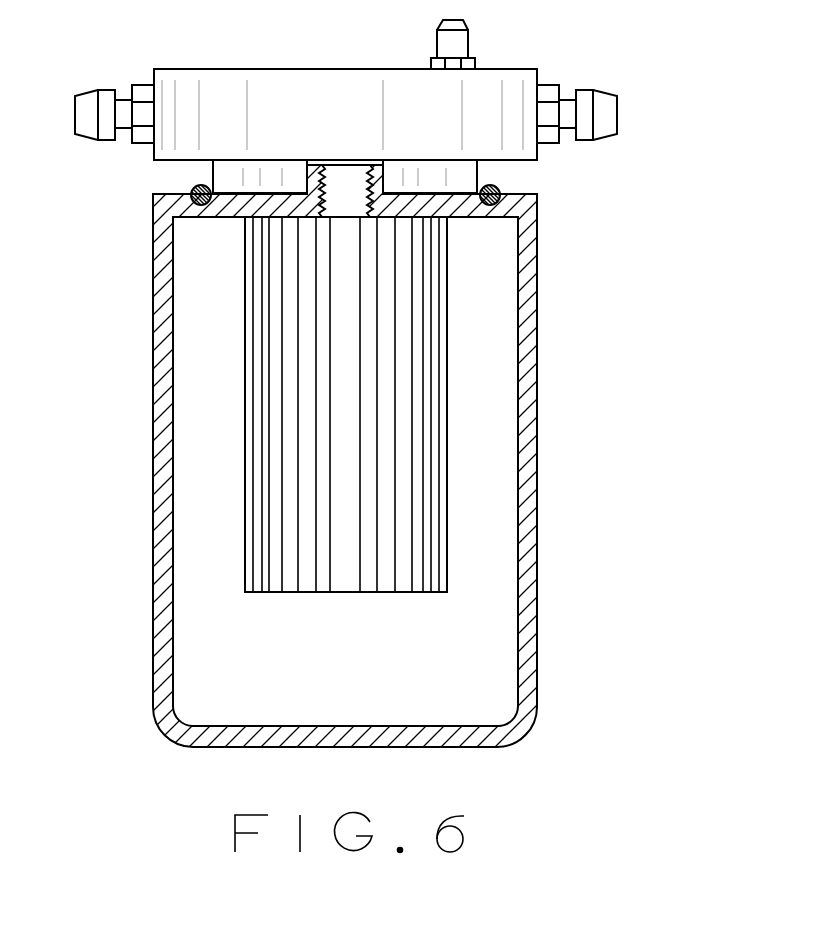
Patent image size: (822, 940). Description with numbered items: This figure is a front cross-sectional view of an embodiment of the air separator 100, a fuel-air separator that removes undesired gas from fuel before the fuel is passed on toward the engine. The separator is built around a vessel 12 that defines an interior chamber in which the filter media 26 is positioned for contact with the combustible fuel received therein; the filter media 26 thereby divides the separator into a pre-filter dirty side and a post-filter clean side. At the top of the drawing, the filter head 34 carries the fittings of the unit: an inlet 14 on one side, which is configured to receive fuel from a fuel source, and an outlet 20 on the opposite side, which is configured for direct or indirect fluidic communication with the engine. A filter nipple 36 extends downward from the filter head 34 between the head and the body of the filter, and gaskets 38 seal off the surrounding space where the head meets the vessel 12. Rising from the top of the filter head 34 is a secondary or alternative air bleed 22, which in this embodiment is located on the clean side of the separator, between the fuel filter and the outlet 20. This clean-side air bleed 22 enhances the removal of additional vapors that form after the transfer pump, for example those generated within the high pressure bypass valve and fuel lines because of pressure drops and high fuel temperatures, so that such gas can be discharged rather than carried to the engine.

The air separator 100 is at (575, 371).
The vessel 12 is at (537, 452).
The inlet 14 is at (75, 138).
The outlet 20 is at (620, 130).
The air bleed 22 is at (461, 167).
The filter media 26 is at (243, 441).
The filter head 34 is at (163, 142).
The filter nipple 36 is at (377, 203).
The gasket 38 is at (182, 190).